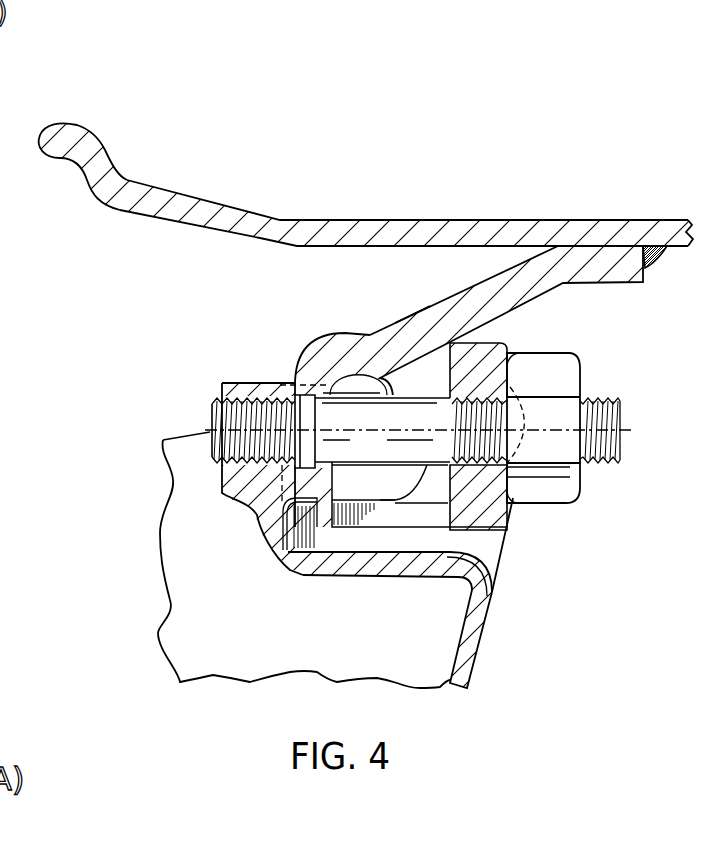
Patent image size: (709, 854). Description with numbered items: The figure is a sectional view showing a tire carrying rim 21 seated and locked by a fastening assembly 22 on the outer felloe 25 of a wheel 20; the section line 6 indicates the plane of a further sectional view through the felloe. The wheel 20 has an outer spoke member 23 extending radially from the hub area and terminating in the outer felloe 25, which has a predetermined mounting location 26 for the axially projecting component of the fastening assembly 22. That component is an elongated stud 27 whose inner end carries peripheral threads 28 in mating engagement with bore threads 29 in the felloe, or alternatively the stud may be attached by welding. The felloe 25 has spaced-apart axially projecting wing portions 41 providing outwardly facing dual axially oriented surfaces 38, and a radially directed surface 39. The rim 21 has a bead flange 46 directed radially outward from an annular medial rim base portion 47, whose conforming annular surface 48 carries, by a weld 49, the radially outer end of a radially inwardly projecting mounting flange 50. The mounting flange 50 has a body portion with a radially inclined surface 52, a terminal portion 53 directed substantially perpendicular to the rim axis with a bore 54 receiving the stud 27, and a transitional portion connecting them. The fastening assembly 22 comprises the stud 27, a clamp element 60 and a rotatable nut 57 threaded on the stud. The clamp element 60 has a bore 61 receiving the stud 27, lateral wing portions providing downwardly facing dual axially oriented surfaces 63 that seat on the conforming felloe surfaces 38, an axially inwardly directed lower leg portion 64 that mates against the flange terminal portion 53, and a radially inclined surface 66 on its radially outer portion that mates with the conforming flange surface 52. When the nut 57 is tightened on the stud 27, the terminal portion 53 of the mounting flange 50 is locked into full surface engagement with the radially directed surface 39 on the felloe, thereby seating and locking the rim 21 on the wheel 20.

The section line 6- 6 is at (690, 87).
The wheel 20 is at (496, 636).
The tire carrying rim 21 is at (500, 160).
The fastening assembly 22 is at (626, 382).
The outer spoke member 23 is at (266, 672).
The outer felloe 25 is at (260, 378).
The mounting location 26 is at (201, 398).
The elongated stud 27 is at (210, 430).
The peripheral threads 28 is at (210, 437).
The bore threads 29 is at (230, 455).
The axially oriented surfaces 38 is at (328, 345).
The radially directed surface 39 is at (312, 560).
The wing portions 41 is at (493, 563).
The bead flange 46 is at (90, 140).
The medial rim base portion 47 is at (673, 218).
The conforming annular surface 48 is at (593, 243).
The weld 49 is at (653, 266).
The mounting flange 50 is at (422, 298).
The radially inclined surface 52 is at (470, 343).
The terminal portion 53 is at (328, 518).
The bore 54 is at (332, 472).
The rotatable nut 57 is at (570, 495).
The clamp element 60 is at (507, 353).
The bore 61 is at (509, 448).
The axially oriented surfaces 63 is at (388, 398).
The lower leg portion 64 is at (393, 522).
The radially inclined surface 66 is at (407, 342).